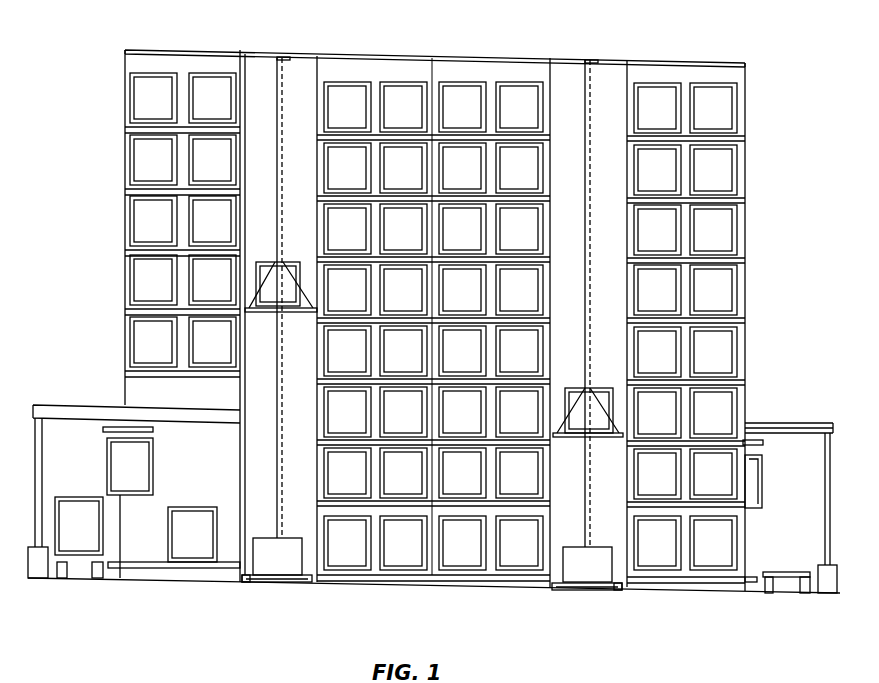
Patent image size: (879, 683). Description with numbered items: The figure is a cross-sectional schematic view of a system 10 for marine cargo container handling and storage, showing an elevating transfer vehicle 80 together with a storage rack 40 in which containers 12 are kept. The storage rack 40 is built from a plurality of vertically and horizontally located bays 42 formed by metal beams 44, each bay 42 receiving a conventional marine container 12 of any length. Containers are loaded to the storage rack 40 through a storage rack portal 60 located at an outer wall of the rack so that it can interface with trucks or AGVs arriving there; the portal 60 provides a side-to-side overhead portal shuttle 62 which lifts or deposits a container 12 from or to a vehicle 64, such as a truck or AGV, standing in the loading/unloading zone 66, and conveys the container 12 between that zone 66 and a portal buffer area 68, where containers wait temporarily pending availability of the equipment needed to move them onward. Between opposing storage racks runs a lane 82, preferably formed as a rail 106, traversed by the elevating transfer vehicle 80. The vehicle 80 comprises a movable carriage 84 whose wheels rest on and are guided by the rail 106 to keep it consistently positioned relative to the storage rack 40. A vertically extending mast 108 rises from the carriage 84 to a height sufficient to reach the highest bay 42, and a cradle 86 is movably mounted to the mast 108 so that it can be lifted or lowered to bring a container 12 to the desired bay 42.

The system 10 is at (116, 146).
The container 12 is at (150, 158).
The storage rack 40 is at (746, 75).
The bay 42 is at (549, 162).
The metal beam 44 is at (545, 251).
The storage rack portal 60 is at (91, 402).
The overhead portal shuttle 62 is at (153, 430).
The vehicle 64 is at (42, 582).
The loading/unloading zone 66 is at (80, 584).
The portal buffer area 68 is at (203, 570).
The elevating transfer vehicle 80 is at (303, 583).
The lane 82 is at (266, 583).
The carriage 84 is at (247, 583).
The cradle 86 is at (299, 314).
The rail 106 is at (277, 582).
The mast 108 is at (280, 78).